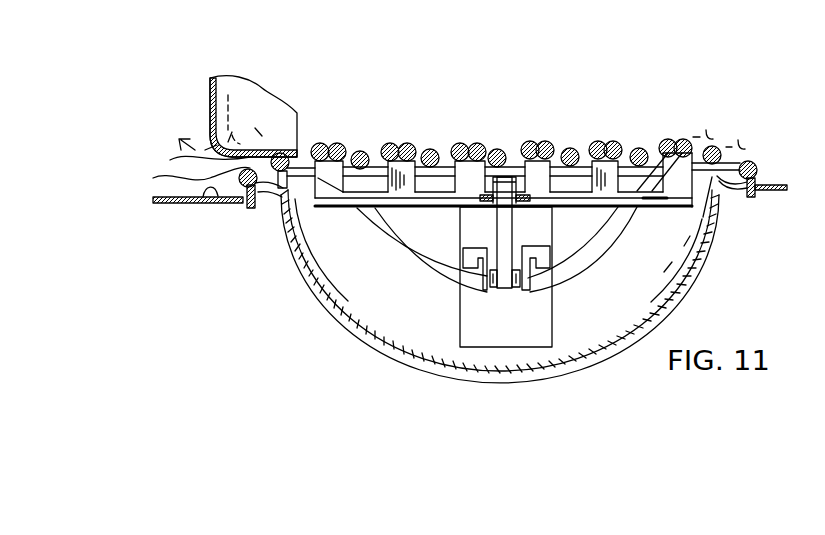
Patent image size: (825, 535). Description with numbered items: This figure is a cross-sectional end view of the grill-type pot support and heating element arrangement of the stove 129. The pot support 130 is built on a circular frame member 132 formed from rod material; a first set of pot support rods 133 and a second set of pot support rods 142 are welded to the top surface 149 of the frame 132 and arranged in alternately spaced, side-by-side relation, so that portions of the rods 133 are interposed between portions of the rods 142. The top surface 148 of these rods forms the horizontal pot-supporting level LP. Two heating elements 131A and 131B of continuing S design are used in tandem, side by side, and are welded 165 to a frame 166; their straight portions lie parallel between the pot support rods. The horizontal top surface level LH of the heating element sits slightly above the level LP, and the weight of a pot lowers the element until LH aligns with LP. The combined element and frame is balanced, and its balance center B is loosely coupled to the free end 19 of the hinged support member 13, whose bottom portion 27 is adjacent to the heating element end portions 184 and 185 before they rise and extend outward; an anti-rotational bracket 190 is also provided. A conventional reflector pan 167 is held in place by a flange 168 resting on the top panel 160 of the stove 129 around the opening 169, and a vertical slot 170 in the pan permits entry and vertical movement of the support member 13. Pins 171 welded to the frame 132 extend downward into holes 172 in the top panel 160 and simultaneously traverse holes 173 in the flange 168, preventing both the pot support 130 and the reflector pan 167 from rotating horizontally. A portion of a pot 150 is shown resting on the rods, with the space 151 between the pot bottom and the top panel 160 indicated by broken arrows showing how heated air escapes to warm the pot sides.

The stove 129 is at (782, 114).
The pot support 130 is at (357, 150).
The heating element 131A is at (503, 123).
The heating element 131B is at (473, 146).
The frame member 132 is at (760, 178).
The pot support rods 133 is at (639, 148).
The pot support rods 142 is at (570, 147).
The top surface 148 is at (642, 149).
The top surface 149 is at (752, 163).
The pot 150 is at (210, 103).
The space 151 is at (180, 157).
The top panel 160 is at (153, 200).
The weld 165 is at (388, 150).
The frame 166 is at (668, 208).
The reflector pan 167 is at (330, 298).
The flange 168 is at (230, 188).
The opening 169 is at (280, 200).
The vertical slot 170 is at (487, 325).
The pins 171 is at (251, 208).
The holes 172 is at (233, 200).
The holes 173 is at (182, 181).
The heating element end portion 184 is at (430, 270).
The heating element end portion 185 is at (597, 243).
The free end 19 is at (499, 222).
The support member 13 is at (496, 290).
The anti-rotational bracket 190 is at (517, 290).
The bottom portion 27 is at (505, 307).
The balance center B is at (507, 117).
The horizontal top surface level LH is at (705, 120).
The horizontal top surface level LP is at (742, 130).